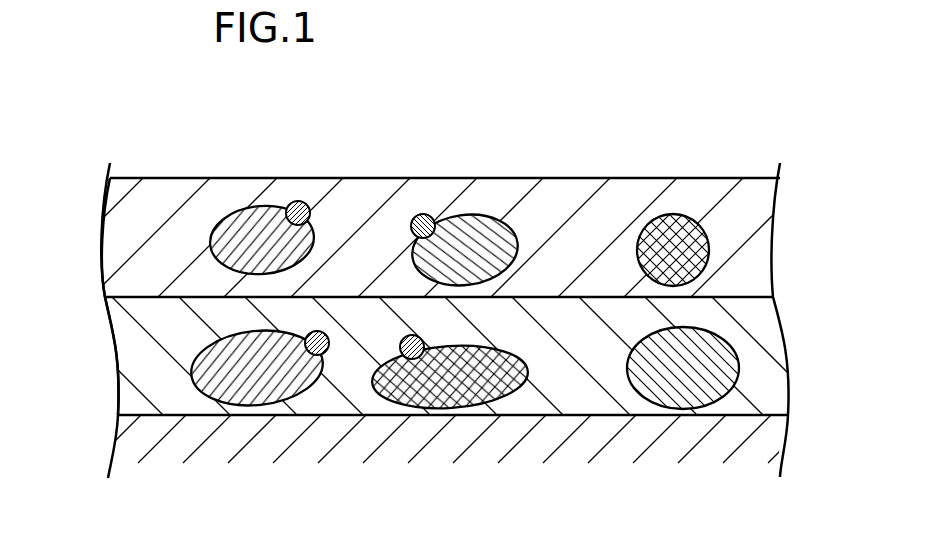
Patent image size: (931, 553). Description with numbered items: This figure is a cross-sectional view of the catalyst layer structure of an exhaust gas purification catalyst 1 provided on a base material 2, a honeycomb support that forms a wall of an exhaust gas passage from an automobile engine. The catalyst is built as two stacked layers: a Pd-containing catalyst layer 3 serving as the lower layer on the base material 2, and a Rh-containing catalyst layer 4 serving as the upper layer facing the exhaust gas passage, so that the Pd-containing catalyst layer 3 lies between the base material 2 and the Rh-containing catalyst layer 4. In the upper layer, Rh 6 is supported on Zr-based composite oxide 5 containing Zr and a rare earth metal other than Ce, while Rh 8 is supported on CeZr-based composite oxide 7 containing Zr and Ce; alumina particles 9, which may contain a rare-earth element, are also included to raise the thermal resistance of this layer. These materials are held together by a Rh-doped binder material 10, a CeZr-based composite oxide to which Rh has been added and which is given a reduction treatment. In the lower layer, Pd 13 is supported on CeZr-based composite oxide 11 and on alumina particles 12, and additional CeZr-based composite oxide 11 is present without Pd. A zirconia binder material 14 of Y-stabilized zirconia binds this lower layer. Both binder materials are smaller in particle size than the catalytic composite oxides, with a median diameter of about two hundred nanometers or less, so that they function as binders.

The exhaust gas purification catalyst 1 is at (733, 95).
The base material 2 is at (767, 437).
The Pd-containing catalyst layer 3 is at (800, 357).
The Rh-containing catalyst layer 4 is at (782, 236).
The Zr-based composite oxide 5 is at (258, 221).
The Rh 6 is at (301, 203).
The CeZr-based composite oxide 7 is at (485, 232).
The Rh 8 is at (424, 215).
The alumina particles 9 is at (673, 228).
The Rh-doped binder material 10 is at (120, 242).
The CeZr-based composite oxide 11 is at (250, 392).
The alumina particles 12 is at (464, 392).
The Pd 13 is at (402, 348).
The zirconia binder material 14 is at (140, 359).